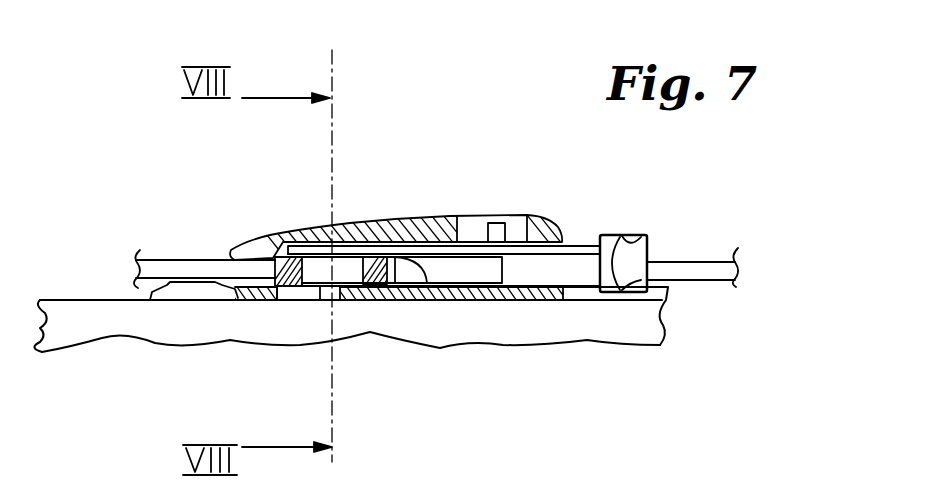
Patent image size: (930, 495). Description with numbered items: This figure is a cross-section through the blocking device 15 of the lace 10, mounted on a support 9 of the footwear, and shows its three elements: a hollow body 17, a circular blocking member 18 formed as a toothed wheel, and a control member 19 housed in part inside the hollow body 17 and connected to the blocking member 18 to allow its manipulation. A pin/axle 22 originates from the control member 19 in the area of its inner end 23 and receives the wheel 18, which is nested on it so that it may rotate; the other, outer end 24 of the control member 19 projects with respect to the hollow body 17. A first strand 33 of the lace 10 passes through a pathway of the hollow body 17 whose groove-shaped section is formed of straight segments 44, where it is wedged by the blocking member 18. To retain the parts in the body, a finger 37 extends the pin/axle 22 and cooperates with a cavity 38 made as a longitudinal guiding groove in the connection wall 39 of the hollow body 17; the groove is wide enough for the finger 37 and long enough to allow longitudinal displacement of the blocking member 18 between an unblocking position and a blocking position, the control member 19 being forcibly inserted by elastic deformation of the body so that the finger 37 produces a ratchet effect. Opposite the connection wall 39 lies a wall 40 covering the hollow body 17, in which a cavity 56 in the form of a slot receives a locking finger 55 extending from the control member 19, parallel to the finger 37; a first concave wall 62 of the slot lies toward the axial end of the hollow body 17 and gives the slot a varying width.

The base body 9 is at (605, 347).
The lace 10 is at (697, 258).
The blocking device 15 is at (505, 104).
The hollow body 17 is at (403, 222).
The blocking member 18 is at (377, 257).
The control member 19 is at (575, 240).
The pin/axle 22 is at (341, 266).
The inner end 23 is at (310, 252).
The outer end 24 is at (622, 236).
The first strand 33 is at (662, 268).
The finger 37 is at (337, 293).
The cavity 38 is at (305, 295).
The connection wall 39 is at (497, 295).
The wall 40 is at (423, 230).
The straight segments 44 is at (276, 247).
The locking finger 55 is at (497, 222).
The cavity 56 is at (467, 225).
The first concave wall 62 is at (515, 222).